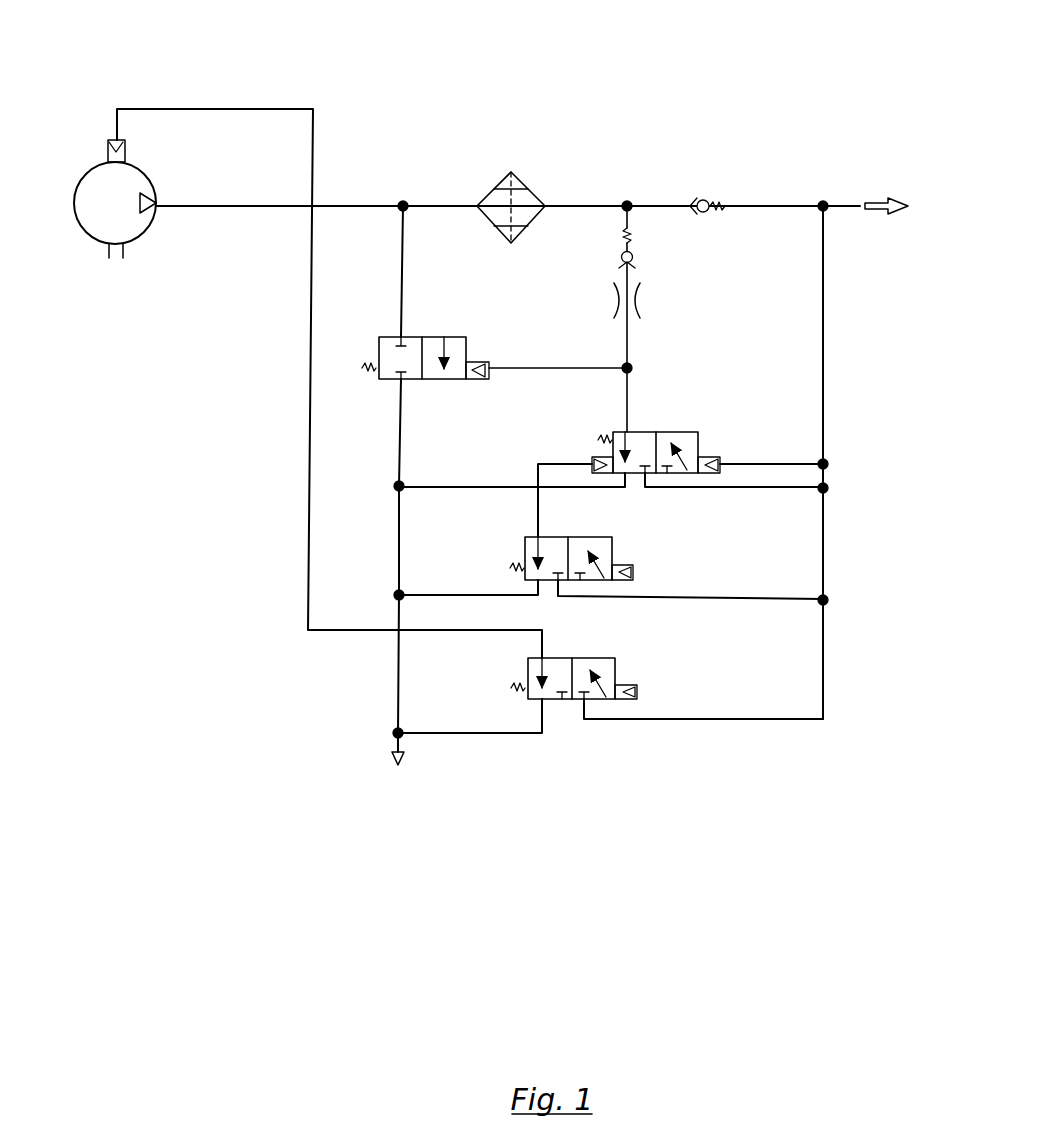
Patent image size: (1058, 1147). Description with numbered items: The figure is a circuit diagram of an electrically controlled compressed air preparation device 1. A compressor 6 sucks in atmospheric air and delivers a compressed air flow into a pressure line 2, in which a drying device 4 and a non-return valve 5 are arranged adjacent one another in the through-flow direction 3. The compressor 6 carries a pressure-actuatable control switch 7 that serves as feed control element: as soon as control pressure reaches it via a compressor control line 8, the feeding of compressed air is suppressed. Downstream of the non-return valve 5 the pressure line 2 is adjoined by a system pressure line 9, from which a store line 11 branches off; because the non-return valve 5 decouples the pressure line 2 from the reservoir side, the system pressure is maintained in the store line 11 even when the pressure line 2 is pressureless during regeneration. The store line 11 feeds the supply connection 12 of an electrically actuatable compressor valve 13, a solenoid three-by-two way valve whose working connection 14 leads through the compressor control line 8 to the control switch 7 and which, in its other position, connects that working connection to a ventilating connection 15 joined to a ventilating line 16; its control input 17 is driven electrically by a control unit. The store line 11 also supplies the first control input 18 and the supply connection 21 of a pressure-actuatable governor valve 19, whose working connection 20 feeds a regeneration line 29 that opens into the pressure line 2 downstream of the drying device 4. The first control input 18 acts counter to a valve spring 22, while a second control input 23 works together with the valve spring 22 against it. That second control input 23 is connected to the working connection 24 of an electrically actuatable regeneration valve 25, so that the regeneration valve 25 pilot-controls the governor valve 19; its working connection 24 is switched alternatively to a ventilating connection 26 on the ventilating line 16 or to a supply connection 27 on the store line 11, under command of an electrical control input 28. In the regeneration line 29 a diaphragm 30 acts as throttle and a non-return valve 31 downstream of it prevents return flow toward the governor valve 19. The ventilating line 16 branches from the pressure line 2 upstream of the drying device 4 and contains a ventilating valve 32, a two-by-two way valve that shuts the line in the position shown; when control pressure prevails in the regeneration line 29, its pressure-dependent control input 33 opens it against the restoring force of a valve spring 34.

The compressed air preparation device 1 is at (270, 828).
The pressure line 2 is at (350, 206).
The through-flow direction 3 is at (882, 195).
The drying device 4 is at (487, 190).
The non-return valve 5 is at (695, 200).
The compressor 6 is at (103, 195).
The control switch 7 is at (111, 140).
The compressor control line 8 is at (193, 109).
The system pressure line 9 is at (767, 206).
The store line 11 is at (823, 438).
The supply connection 12 is at (588, 707).
The compressor valve 13 is at (556, 704).
The working connection 14 is at (536, 650).
The ventilating connection 15 is at (539, 708).
The ventilating line 16 is at (398, 676).
The control input 17 is at (636, 700).
The first control input 18 is at (713, 455).
The governor valve 19 is at (680, 420).
The working connection 20 is at (640, 419).
The supply connection 21 is at (652, 481).
The valve spring 22 is at (602, 428).
The second control input 23 is at (594, 455).
The working connection 24 is at (530, 532).
The regeneration valve 25 is at (624, 538).
The ventilating connection 26 is at (528, 589).
The supply connection 27 is at (568, 588).
The control input 28 is at (632, 568).
The regeneration line 29 is at (631, 229).
The diaphragm 30 is at (643, 298).
The non-return valve 31 is at (640, 263).
The ventilating valve 32 is at (398, 358).
The pressure-dependent control input 33 is at (485, 360).
The valve spring 34 is at (358, 355).